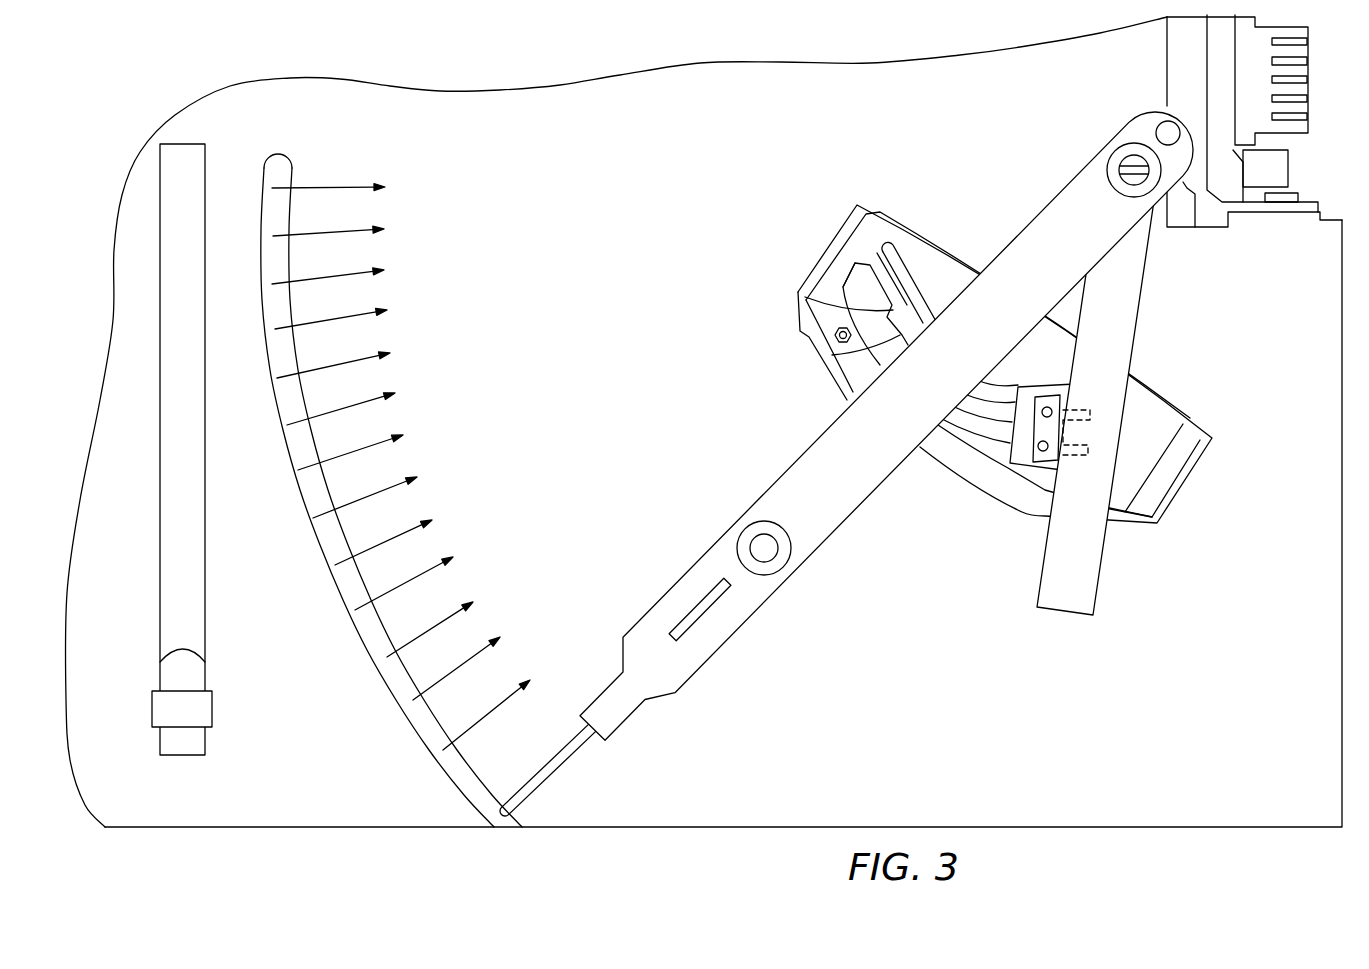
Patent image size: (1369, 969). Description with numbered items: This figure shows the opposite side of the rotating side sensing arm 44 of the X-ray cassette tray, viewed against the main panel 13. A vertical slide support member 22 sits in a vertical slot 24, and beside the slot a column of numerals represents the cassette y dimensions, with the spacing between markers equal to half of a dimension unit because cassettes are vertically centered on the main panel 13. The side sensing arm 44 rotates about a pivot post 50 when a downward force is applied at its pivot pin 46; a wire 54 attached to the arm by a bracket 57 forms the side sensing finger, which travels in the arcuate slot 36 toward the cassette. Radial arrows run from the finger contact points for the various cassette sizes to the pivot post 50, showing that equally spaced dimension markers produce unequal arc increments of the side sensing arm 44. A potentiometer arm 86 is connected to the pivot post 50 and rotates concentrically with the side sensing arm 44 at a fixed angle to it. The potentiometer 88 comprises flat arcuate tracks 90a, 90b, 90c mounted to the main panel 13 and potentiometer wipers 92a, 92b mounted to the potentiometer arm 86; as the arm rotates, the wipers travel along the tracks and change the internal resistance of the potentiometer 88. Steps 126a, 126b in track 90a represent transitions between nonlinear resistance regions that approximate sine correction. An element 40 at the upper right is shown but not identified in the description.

The main panel 13 is at (888, 70).
The vertical slide support member 22 is at (180, 658).
The vertical slot 24 is at (160, 492).
The arcuate slot 36 is at (410, 733).
The motor 40 is at (1308, 68).
The side sensing arm 44 is at (1017, 236).
The pivot pin 46 is at (1159, 125).
The pivot post 50 is at (1124, 160).
The wire 54 is at (558, 768).
The bracket 57 is at (751, 525).
The potentiometer arm 86 is at (1095, 590).
The potentiometer 88 is at (962, 482).
The flat arcuate track 90a is at (855, 280).
The flat arcuate track 90b is at (866, 225).
The flat arcuate track 90c is at (891, 250).
The potentiometer wiper 92a is at (1087, 452).
The potentiometer wiper 92b is at (1042, 427).
The step 126a is at (805, 297).
The step 126b is at (835, 355).